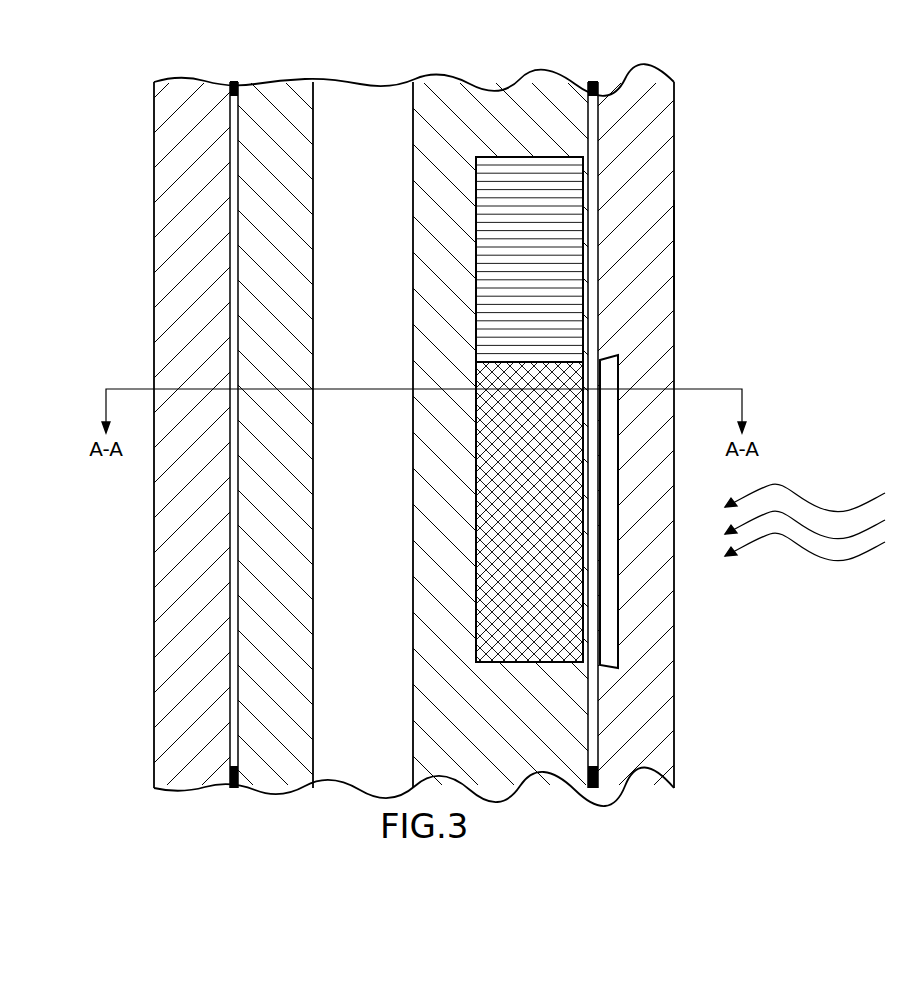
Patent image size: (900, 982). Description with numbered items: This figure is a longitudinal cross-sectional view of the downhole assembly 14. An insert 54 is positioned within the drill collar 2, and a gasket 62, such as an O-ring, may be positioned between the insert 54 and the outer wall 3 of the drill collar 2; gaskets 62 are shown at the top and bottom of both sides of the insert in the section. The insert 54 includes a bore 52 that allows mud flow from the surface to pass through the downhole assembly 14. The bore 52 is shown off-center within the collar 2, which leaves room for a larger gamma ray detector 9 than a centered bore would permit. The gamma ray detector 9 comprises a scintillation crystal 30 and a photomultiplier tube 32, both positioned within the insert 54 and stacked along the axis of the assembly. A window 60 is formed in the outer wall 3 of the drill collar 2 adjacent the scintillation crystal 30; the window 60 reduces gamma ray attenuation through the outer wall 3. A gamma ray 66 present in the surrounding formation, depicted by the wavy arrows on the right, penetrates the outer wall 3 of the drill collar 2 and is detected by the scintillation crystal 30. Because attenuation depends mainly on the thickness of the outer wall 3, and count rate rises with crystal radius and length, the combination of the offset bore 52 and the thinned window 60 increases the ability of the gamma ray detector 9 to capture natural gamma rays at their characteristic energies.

The drill collar 2 is at (674, 143).
The outer wall 3 is at (674, 236).
The downhole assembly 14 is at (748, 262).
The bore 52 is at (378, 92).
The insert 54 is at (518, 82).
The gasket 62 is at (236, 82).
The photomultiplier tube 32 is at (510, 202).
The gamma ray detector 9 is at (572, 286).
The scintillation crystal 30 is at (520, 640).
The window 60 is at (620, 593).
The gamma ray 66 is at (856, 502).